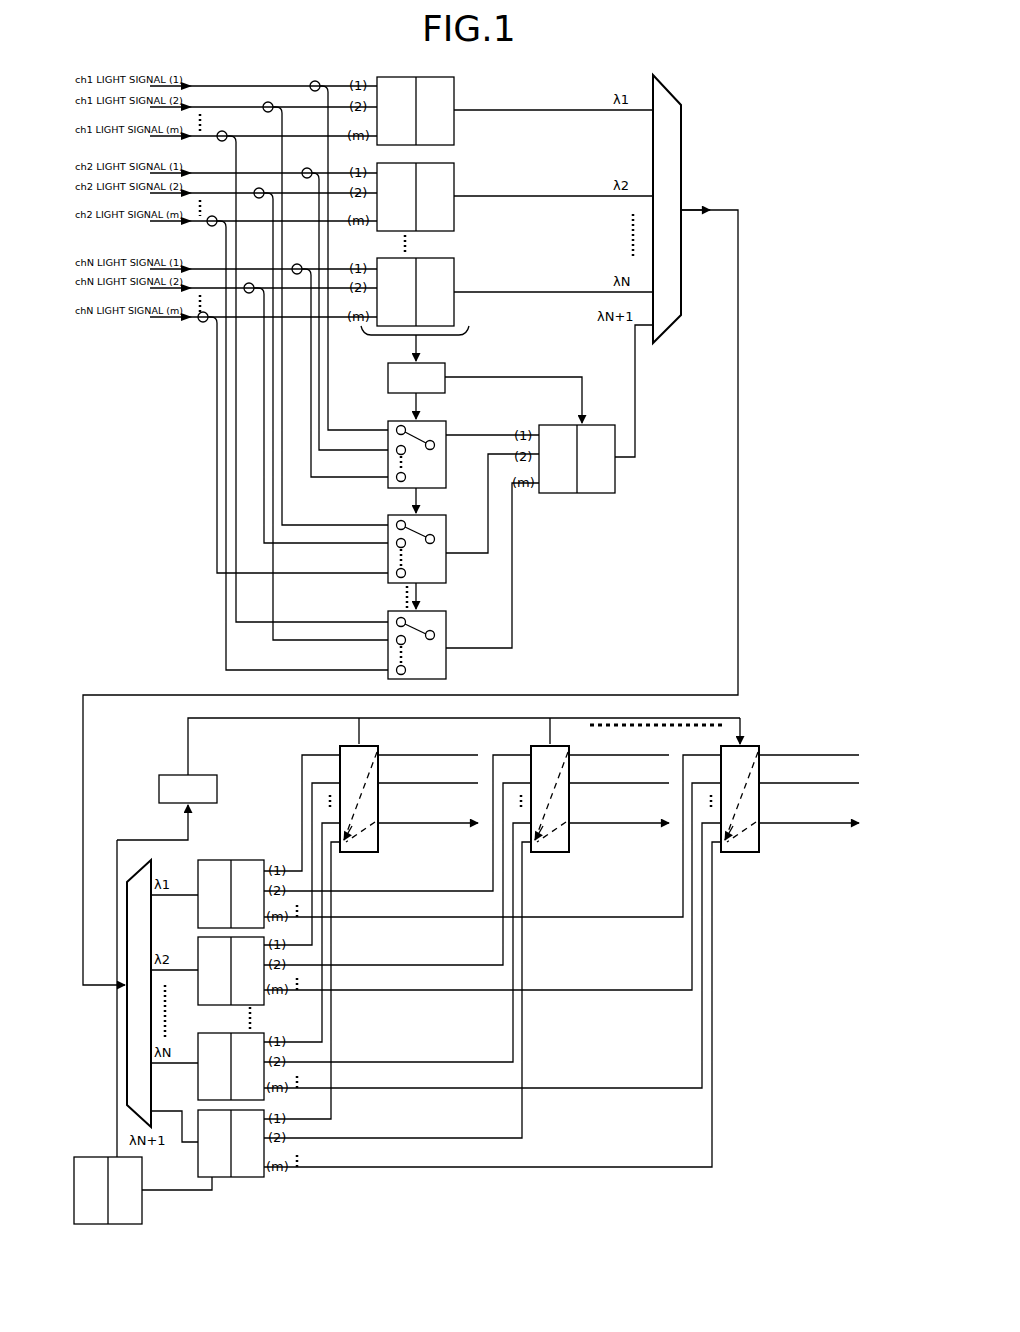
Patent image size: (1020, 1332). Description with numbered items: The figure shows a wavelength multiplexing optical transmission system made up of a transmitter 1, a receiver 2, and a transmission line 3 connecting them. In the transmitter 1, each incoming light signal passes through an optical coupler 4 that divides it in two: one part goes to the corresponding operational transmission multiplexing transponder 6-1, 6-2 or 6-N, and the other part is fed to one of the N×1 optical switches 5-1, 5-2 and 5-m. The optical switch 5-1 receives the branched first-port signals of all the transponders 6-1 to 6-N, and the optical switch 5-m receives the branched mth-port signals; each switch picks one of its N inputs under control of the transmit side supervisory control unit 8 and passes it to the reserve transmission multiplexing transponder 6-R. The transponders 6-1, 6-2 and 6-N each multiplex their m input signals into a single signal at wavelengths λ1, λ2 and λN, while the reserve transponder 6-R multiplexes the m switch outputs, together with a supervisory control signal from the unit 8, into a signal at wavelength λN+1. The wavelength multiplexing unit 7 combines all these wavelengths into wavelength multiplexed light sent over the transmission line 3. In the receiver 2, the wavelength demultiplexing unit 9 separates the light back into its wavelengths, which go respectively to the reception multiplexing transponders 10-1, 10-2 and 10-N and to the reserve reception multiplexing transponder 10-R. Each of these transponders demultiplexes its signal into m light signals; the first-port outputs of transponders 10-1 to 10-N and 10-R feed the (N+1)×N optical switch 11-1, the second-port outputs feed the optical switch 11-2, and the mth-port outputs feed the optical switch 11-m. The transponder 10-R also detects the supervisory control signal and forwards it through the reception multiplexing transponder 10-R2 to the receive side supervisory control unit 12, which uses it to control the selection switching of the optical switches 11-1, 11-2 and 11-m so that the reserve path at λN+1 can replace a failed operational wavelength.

The transmitter 1 is at (749, 90).
The receiver 2 is at (766, 710).
The transmission line 3 is at (690, 208).
The optical coupler 4 is at (316, 82).
The N×1 optical switch 5-1 is at (449, 427).
The N×1 optical switch 5-2 is at (449, 581).
The N×1 optical switch 5-m is at (449, 676).
The transmission multiplexing transponder 6-1 is at (457, 96).
The transmission multiplexing transponder 6-2 is at (457, 182).
The transmission multiplexing transponder 6-N is at (457, 277).
The reserve transmission multiplexing transponder 6-R is at (608, 424).
The wavelength multiplexing unit 7 is at (668, 90).
The transmit side supervisory control unit 8 is at (448, 375).
The wavelength demultiplexing unit 9 is at (145, 872).
The reception multiplexing transponder 10-1 is at (198, 906).
The reception multiplexing transponder 10-2 is at (198, 986).
The reception multiplexing transponder 10-N is at (198, 1078).
The reserve reception multiplexing transponder 10-R is at (198, 1157).
The reception multiplexing transponder 10-R2 is at (143, 1214).
The (N+1)×N optical switch 11-1 is at (380, 846).
The (N+1)×N optical switch 11-2 is at (571, 846).
The (N+1)×N optical switch 11-m is at (762, 846).
The receive side supervisory control unit 12 is at (220, 791).